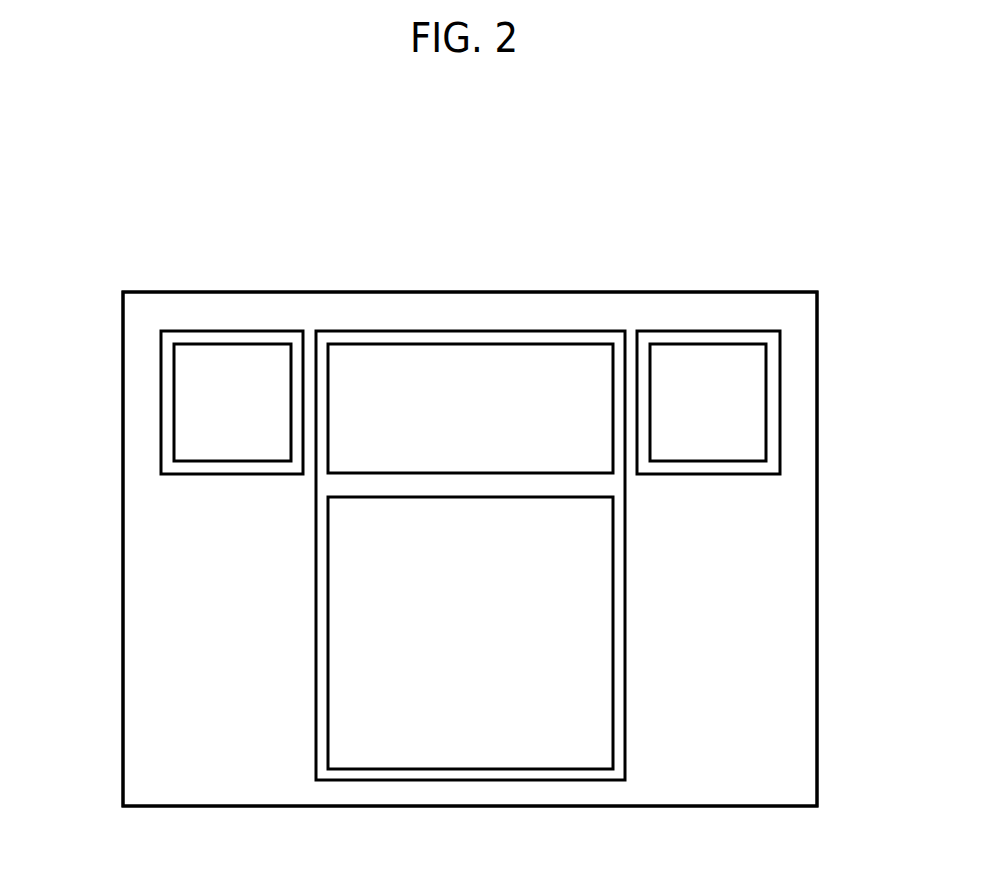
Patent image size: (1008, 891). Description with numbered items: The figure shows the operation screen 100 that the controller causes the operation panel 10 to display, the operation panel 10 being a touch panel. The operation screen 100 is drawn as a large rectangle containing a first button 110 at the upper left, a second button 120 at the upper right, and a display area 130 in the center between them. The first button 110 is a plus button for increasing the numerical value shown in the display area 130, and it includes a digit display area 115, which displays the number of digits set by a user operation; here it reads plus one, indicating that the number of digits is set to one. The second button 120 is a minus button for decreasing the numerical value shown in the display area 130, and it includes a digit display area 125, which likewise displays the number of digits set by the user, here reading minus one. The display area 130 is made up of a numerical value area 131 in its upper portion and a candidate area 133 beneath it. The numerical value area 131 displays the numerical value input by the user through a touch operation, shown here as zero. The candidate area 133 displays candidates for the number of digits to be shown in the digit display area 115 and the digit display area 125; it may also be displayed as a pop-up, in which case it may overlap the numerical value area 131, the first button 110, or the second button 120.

The operation screen 100 is at (787, 233).
The operation panel 10 is at (323, 292).
The first button 110 is at (215, 330).
The digit display area 115 is at (175, 401).
The second button 120 is at (670, 330).
The digit display area 125 is at (767, 392).
The display area 130 is at (413, 330).
The numerical value area 131 is at (545, 344).
The candidate area 133 is at (443, 770).